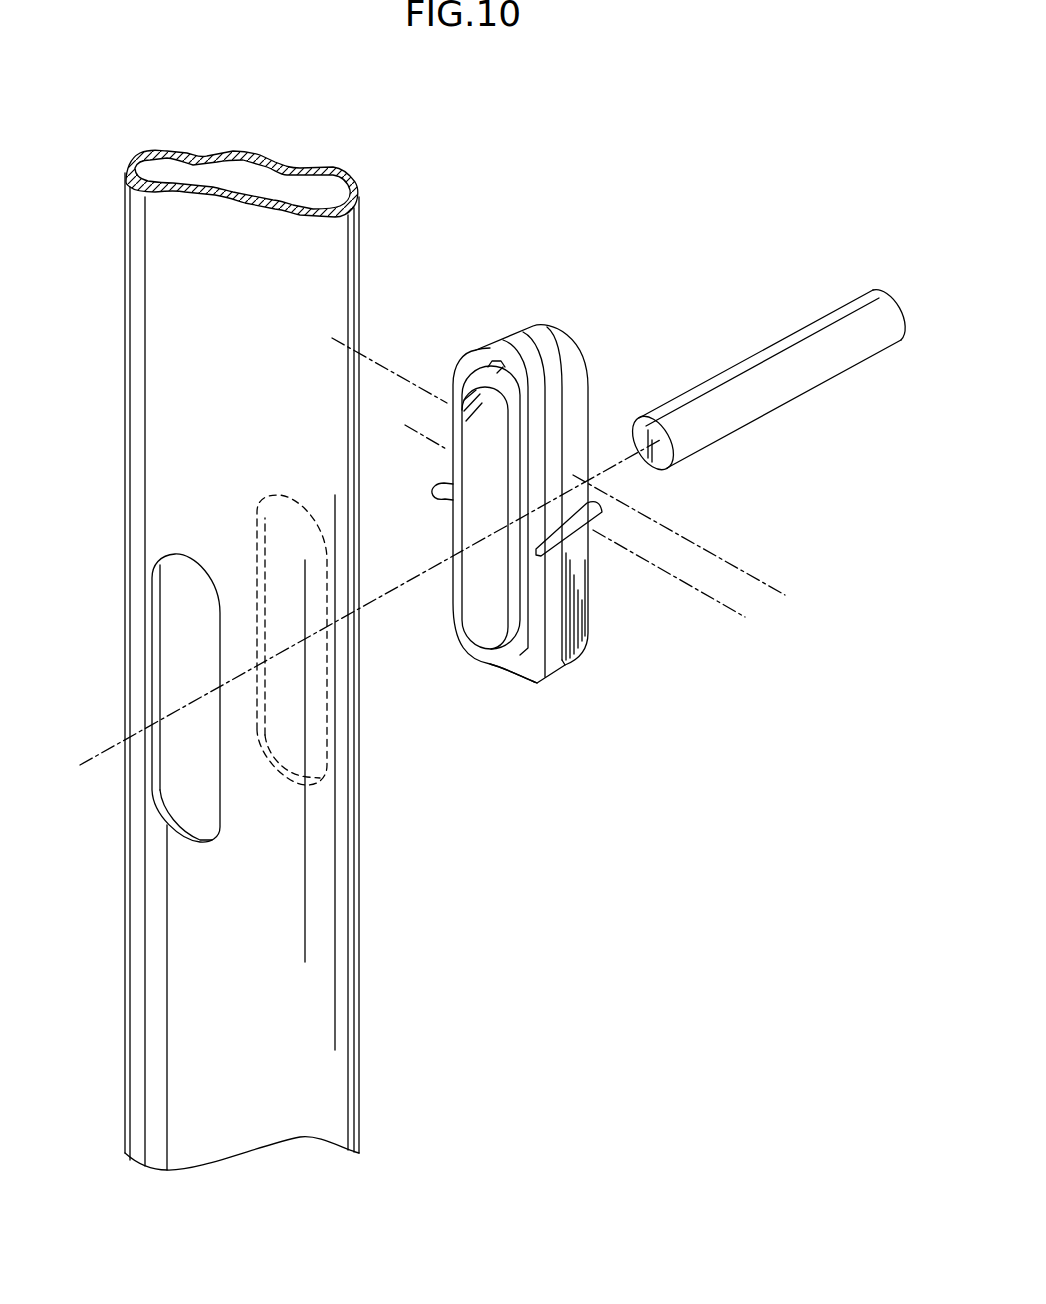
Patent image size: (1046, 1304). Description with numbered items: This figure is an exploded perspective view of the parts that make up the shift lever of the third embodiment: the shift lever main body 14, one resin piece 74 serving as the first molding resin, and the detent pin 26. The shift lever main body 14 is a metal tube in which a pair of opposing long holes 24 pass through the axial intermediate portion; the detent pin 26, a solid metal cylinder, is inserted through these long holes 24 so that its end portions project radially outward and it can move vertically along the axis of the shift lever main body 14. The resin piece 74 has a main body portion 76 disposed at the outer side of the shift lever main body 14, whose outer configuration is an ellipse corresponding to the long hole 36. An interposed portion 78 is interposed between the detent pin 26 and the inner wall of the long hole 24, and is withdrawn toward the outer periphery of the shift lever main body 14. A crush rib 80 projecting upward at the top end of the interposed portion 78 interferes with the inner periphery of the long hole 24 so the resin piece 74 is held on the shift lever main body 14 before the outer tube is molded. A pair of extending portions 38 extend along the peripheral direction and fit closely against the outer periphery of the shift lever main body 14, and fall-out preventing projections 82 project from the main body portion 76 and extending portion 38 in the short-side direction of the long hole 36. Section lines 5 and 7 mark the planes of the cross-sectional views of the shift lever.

The shift lever main body 14 is at (134, 344).
The long hole 24 is at (160, 610).
The detent pin 26 is at (800, 382).
The long hole 36 is at (485, 603).
The extending portion 38 is at (550, 665).
The resin piece 74 is at (556, 332).
The main body portion 76 is at (577, 625).
The interposed portion 78 is at (483, 656).
The crush rib 80 is at (495, 366).
The fall-out preventing projection 82 is at (446, 498).
The line 5- 5 is at (332, 338).
The line 7- 7 is at (405, 425).